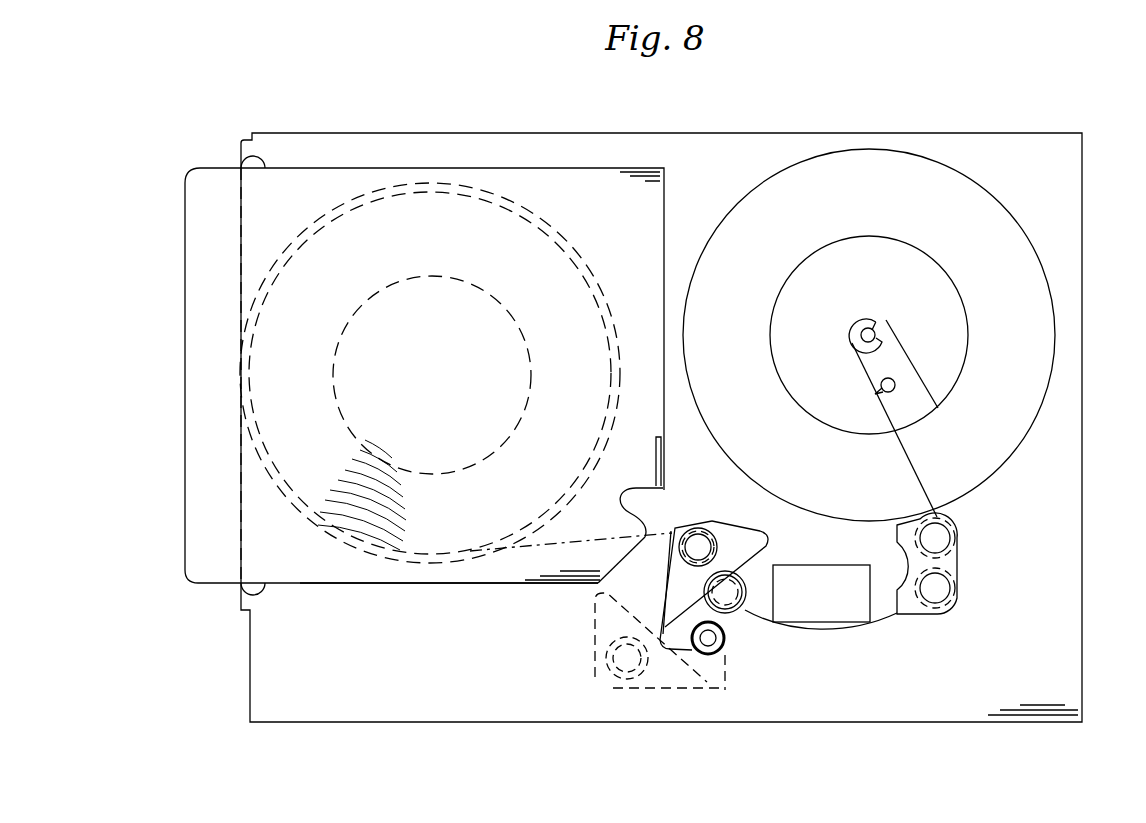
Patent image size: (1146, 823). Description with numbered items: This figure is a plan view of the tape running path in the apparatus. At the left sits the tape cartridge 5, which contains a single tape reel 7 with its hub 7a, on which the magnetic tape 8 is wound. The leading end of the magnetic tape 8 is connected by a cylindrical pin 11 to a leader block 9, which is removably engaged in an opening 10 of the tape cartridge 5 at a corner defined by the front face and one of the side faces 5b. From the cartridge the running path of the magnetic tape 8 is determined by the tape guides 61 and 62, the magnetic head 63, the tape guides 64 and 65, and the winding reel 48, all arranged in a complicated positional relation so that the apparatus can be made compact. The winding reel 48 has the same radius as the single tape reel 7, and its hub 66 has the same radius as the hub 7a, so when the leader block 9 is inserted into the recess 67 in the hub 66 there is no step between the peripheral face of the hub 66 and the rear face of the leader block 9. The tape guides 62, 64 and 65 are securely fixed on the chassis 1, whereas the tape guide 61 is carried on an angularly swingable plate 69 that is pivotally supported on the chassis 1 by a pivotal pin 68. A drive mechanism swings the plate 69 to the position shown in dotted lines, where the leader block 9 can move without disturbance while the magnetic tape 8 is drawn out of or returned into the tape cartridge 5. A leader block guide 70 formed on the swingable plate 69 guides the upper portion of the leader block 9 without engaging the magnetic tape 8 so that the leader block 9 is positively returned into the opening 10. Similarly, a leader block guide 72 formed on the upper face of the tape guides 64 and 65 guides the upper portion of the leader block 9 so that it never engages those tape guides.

The chassis 1 is at (1067, 642).
The tape cartridge 5 is at (185, 510).
The side face 5b is at (360, 583).
The single tape reel 7 is at (542, 230).
The hub 7a is at (478, 300).
The magnetic tape 8 is at (337, 508).
The leader block 9 is at (917, 403).
The opening 10 is at (640, 500).
The cylindrical pin 11 is at (878, 388).
The winding reel 48 is at (893, 158).
The tape guide 61 is at (702, 545).
The tape guide 62 is at (735, 598).
The magnetic head 63 is at (840, 620).
The tape guide 64 is at (940, 590).
The tape guide 65 is at (940, 538).
The hub 66 is at (922, 268).
The recess 67 is at (877, 314).
The pivotal pin 68 is at (725, 648).
The angularly swingable plate 69 is at (675, 648).
The leader block guide 70 is at (680, 604).
The leader block guide 72 is at (958, 560).